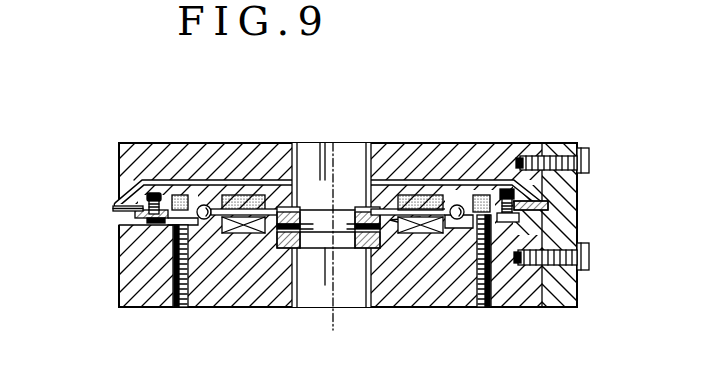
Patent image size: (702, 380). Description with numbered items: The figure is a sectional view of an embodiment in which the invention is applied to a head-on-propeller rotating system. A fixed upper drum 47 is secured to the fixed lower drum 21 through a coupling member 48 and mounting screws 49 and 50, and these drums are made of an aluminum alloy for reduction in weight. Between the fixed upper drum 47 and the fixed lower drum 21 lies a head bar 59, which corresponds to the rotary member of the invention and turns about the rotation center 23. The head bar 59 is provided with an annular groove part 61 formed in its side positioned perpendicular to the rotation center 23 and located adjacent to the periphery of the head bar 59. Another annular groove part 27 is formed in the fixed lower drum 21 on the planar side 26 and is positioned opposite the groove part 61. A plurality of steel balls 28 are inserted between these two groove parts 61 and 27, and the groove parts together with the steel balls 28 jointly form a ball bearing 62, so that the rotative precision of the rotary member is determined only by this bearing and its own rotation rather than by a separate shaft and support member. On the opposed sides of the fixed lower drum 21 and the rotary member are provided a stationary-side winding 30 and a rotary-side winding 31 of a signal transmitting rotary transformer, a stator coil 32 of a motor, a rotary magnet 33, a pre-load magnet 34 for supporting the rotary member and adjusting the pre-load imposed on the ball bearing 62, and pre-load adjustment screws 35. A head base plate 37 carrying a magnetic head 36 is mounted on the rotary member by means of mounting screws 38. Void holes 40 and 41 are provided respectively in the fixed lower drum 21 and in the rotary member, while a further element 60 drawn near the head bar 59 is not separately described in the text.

The fixed lower drum 21 is at (510, 295).
The rotation center 23 is at (339, 143).
The planar surface part 26 is at (200, 298).
The annular groove part 27 is at (203, 220).
The steel balls 28 is at (225, 194).
The stationary-side winding 30 is at (265, 233).
The rotary-side winding 31 is at (310, 208).
The stator coil 32 is at (444, 233).
The rotary magnet 33 is at (418, 194).
The pre-load magnet 34 is at (180, 194).
The pre-load adjustment screws 35 is at (170, 240).
The magnetic head 36 is at (120, 205).
The head base plate 37 is at (118, 212).
The mounting screws 38 is at (160, 224).
The void hole 40 is at (352, 305).
The void hole 41 is at (358, 207).
The fixed upper drum 47 is at (478, 165).
The coupling member 48 is at (561, 295).
The mounting screw 49 is at (584, 146).
The mounting screw 50 is at (588, 268).
The head bar 59 is at (388, 208).
The bar 60 is at (278, 208).
The annular groove part 61 is at (158, 193).
The ball bearing 62 is at (459, 221).